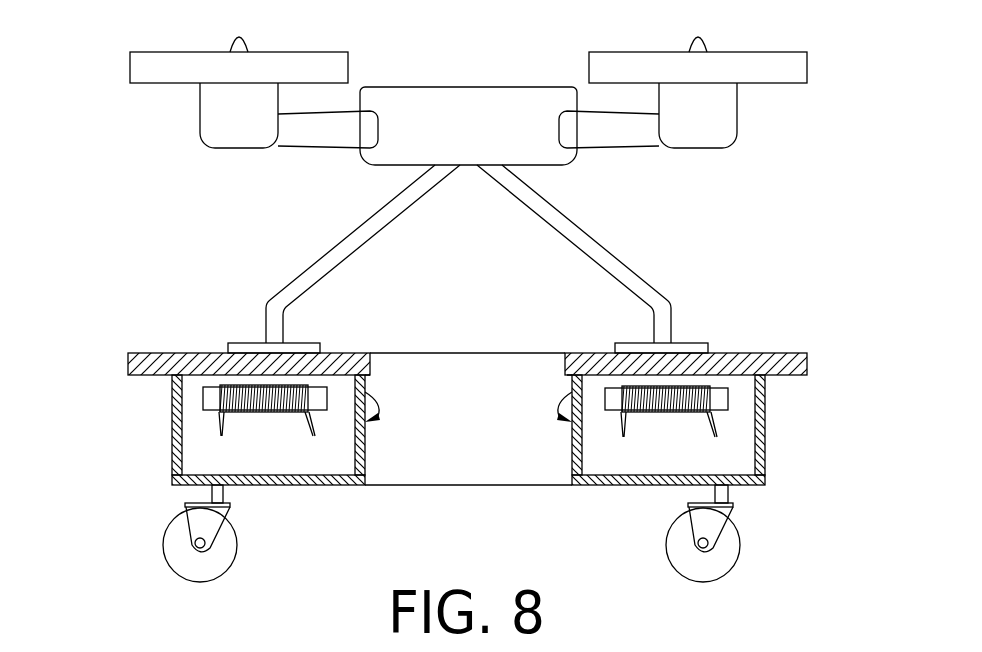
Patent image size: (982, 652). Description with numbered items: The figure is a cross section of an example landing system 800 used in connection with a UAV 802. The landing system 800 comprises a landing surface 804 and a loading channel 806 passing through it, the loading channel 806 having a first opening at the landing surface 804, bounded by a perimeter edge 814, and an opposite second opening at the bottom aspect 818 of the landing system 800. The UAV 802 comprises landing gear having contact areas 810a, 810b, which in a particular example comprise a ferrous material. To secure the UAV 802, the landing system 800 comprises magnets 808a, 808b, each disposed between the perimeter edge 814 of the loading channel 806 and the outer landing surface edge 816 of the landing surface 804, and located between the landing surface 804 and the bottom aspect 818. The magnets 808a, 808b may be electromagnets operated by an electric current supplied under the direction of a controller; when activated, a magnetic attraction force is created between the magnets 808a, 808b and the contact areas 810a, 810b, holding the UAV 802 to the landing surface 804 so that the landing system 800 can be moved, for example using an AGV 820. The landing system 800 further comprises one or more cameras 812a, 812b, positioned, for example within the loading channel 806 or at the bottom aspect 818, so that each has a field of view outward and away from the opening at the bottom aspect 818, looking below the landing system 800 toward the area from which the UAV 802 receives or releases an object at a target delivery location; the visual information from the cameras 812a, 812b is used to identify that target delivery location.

The landing system 800 is at (128, 320).
The UAV 802 is at (187, 33).
The landing surface 804 is at (345, 354).
The loading channel 806 is at (444, 377).
The magnet 808a is at (203, 399).
The magnet 808b is at (720, 398).
The contact area 810a is at (250, 342).
The contact area 810b is at (690, 342).
The camera 812a is at (379, 417).
The camera 812b is at (560, 417).
The perimeter edge 814 is at (372, 365).
The outer landing surface edge 816 is at (128, 364).
The bottom aspect 818 is at (331, 487).
The AGV 820 is at (196, 460).